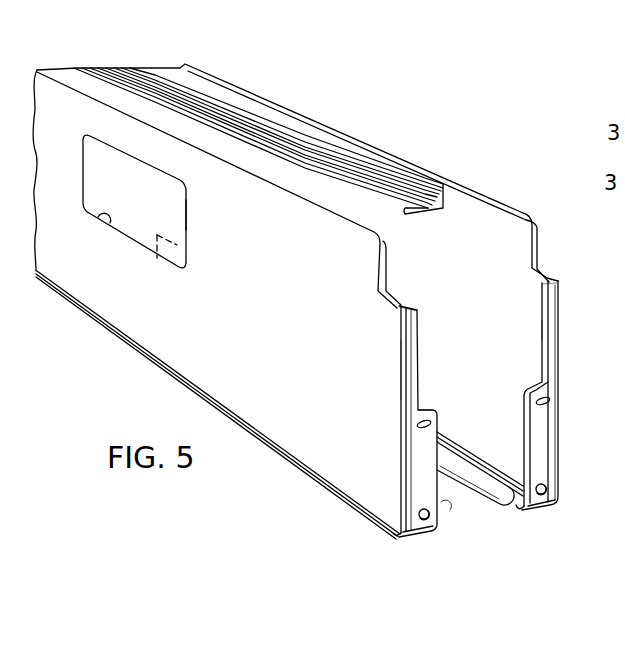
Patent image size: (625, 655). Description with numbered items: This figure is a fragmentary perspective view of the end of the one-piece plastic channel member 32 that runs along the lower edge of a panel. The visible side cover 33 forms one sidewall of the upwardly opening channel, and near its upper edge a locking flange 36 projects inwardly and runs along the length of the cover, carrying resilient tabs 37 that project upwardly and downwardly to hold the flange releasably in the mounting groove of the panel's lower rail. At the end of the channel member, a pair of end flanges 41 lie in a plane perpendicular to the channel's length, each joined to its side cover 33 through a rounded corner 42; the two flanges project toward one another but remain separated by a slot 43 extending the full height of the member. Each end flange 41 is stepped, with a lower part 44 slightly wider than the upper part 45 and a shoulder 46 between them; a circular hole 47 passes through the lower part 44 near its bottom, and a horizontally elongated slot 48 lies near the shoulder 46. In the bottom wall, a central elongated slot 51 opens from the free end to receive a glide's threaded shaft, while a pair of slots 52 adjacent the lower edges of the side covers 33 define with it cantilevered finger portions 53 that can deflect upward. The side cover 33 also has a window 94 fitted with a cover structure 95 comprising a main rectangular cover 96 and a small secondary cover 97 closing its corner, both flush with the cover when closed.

The channel member 32 is at (353, 136).
The side cover 33 is at (295, 301).
The locking flange 36 is at (233, 128).
The resilient tabs 37 is at (253, 128).
The end flange 41 is at (420, 494).
The rounded corner 42 is at (403, 398).
The slot 43 is at (475, 358).
The lower part 44 is at (423, 454).
The upper part 45 is at (413, 338).
The shoulder 46 is at (442, 396).
The circular hole 47 is at (546, 494).
The elongated slot 48 is at (551, 397).
The elongated slot 51 is at (460, 502).
The slots 52 is at (481, 462).
The finger portions 53 is at (450, 514).
The window 94 is at (110, 222).
The cover structure 95 is at (96, 138).
The main cover 96 is at (178, 210).
The secondary cover 97 is at (175, 257).